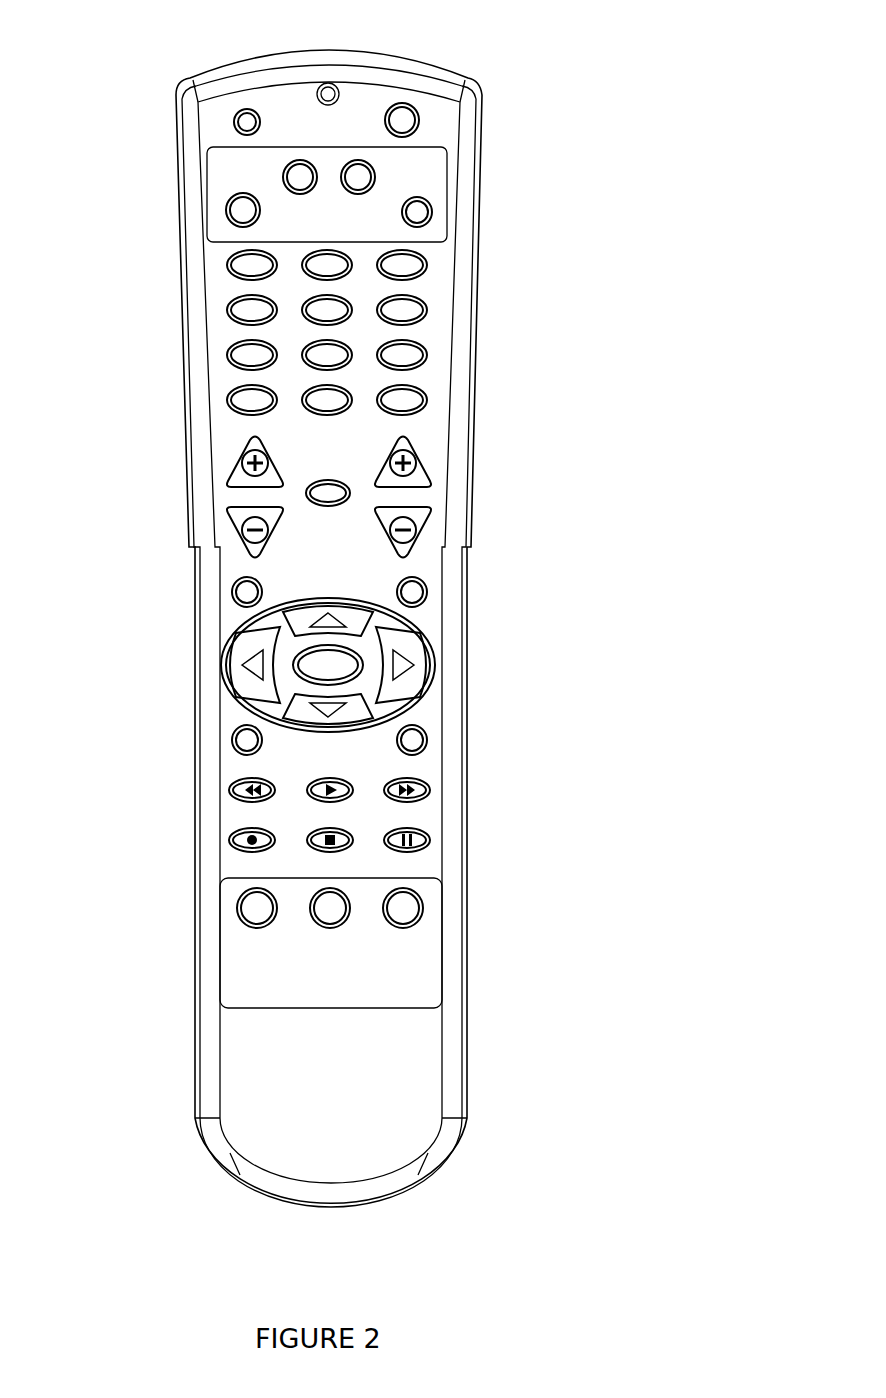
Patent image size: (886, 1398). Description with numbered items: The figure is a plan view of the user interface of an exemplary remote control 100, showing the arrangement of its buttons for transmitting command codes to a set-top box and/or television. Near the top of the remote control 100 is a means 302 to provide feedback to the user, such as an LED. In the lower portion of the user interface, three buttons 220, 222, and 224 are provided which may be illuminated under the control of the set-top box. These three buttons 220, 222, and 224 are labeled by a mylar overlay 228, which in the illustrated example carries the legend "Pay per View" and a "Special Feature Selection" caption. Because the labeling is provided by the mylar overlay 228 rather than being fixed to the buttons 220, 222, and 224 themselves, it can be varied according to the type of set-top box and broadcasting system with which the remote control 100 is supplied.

The remote control 100 is at (478, 482).
The means to provide feedback to the user 302 is at (333, 85).
The button 220 is at (257, 889).
The button 222 is at (333, 888).
The button 224 is at (415, 930).
The mylar overlay 228 is at (238, 990).